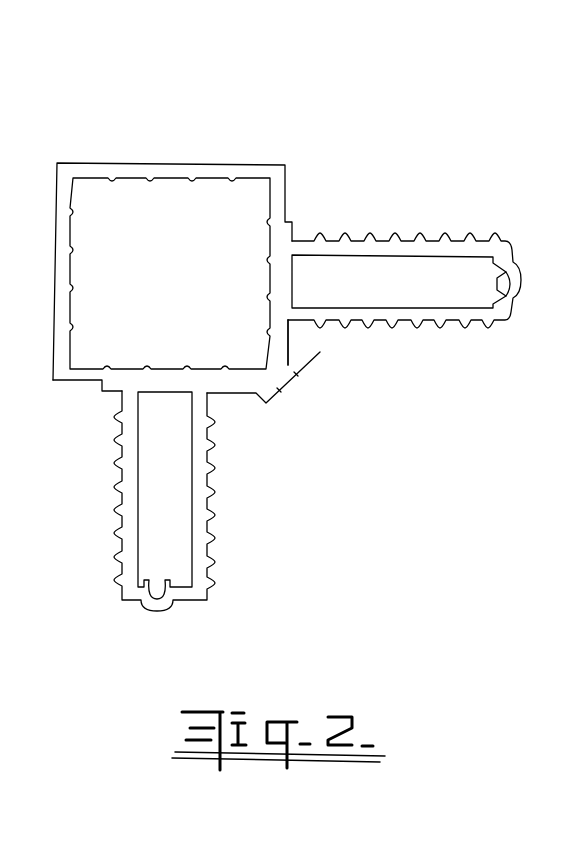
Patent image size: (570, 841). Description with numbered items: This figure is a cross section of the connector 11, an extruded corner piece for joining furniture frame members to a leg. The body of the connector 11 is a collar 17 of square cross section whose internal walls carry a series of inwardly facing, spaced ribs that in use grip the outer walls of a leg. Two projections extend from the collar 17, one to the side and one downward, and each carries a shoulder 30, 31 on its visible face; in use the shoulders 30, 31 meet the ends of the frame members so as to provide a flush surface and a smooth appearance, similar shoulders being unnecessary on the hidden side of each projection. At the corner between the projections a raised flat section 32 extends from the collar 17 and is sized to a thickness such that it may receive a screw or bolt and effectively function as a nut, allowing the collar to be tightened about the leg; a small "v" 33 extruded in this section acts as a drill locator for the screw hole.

The connector 11 is at (297, 119).
The collar 17 is at (263, 166).
The shoulder 30 is at (293, 232).
The shoulder 31 is at (102, 394).
The raised flat section 32 is at (320, 355).
The small "v" 33 is at (282, 401).